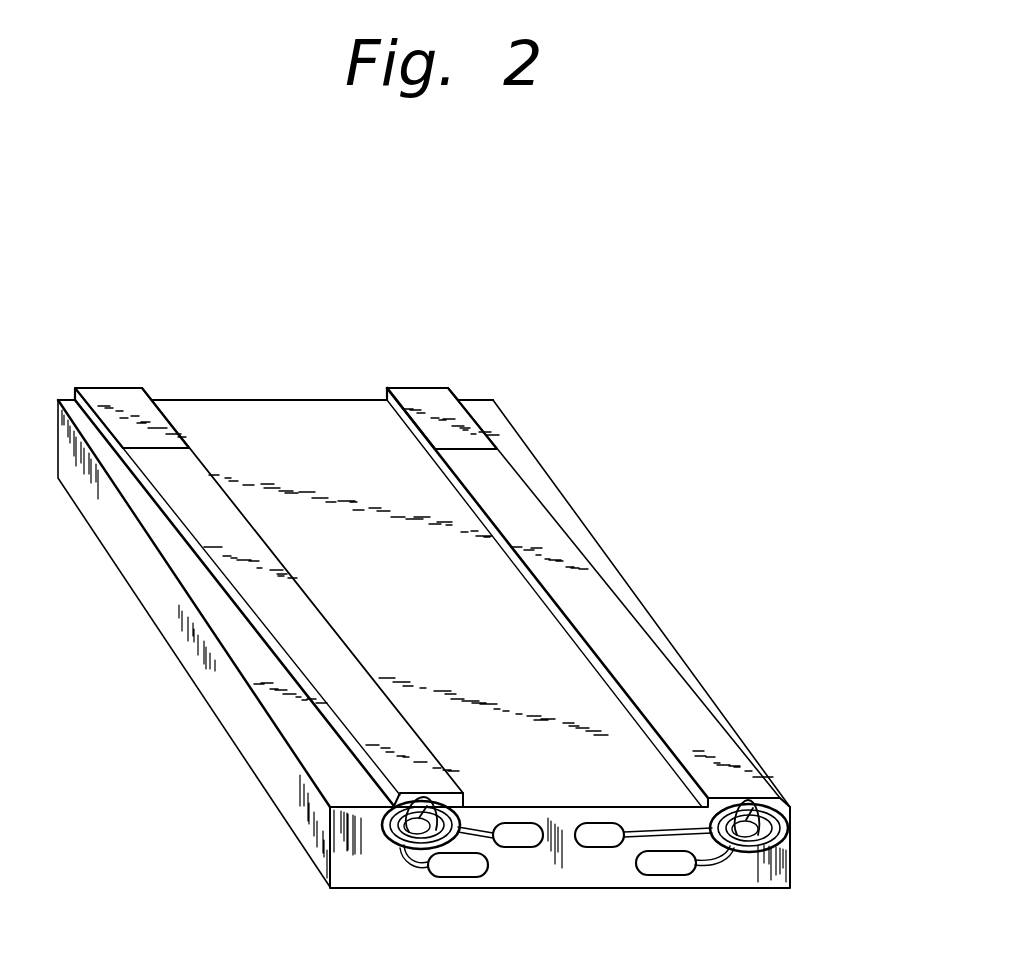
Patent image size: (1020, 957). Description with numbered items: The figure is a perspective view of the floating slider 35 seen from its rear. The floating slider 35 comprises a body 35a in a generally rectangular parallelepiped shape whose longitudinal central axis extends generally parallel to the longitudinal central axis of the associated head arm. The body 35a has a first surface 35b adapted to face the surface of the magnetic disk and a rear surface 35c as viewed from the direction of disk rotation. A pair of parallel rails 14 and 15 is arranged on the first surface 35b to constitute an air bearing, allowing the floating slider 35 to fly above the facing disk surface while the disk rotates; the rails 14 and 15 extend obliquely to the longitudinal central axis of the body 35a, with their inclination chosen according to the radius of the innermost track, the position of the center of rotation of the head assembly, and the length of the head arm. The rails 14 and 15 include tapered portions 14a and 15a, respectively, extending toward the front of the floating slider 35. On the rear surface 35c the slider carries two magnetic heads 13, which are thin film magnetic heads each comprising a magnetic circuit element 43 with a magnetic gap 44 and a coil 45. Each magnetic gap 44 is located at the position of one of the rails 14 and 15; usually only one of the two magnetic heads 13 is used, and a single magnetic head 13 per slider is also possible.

The magnetic head 13 is at (484, 898).
The rail 14 is at (264, 564).
The tapered portion 14a is at (112, 400).
The rail 15 is at (583, 556).
The tapered portion 15a is at (427, 397).
The floating slider 35 is at (587, 503).
The body 35a is at (617, 568).
The first surface 35b is at (288, 428).
The rear surface 35c is at (762, 870).
The magnetic circuit element 43 is at (407, 820).
The magnetic gap 44 is at (423, 797).
The coil 45 is at (397, 842).